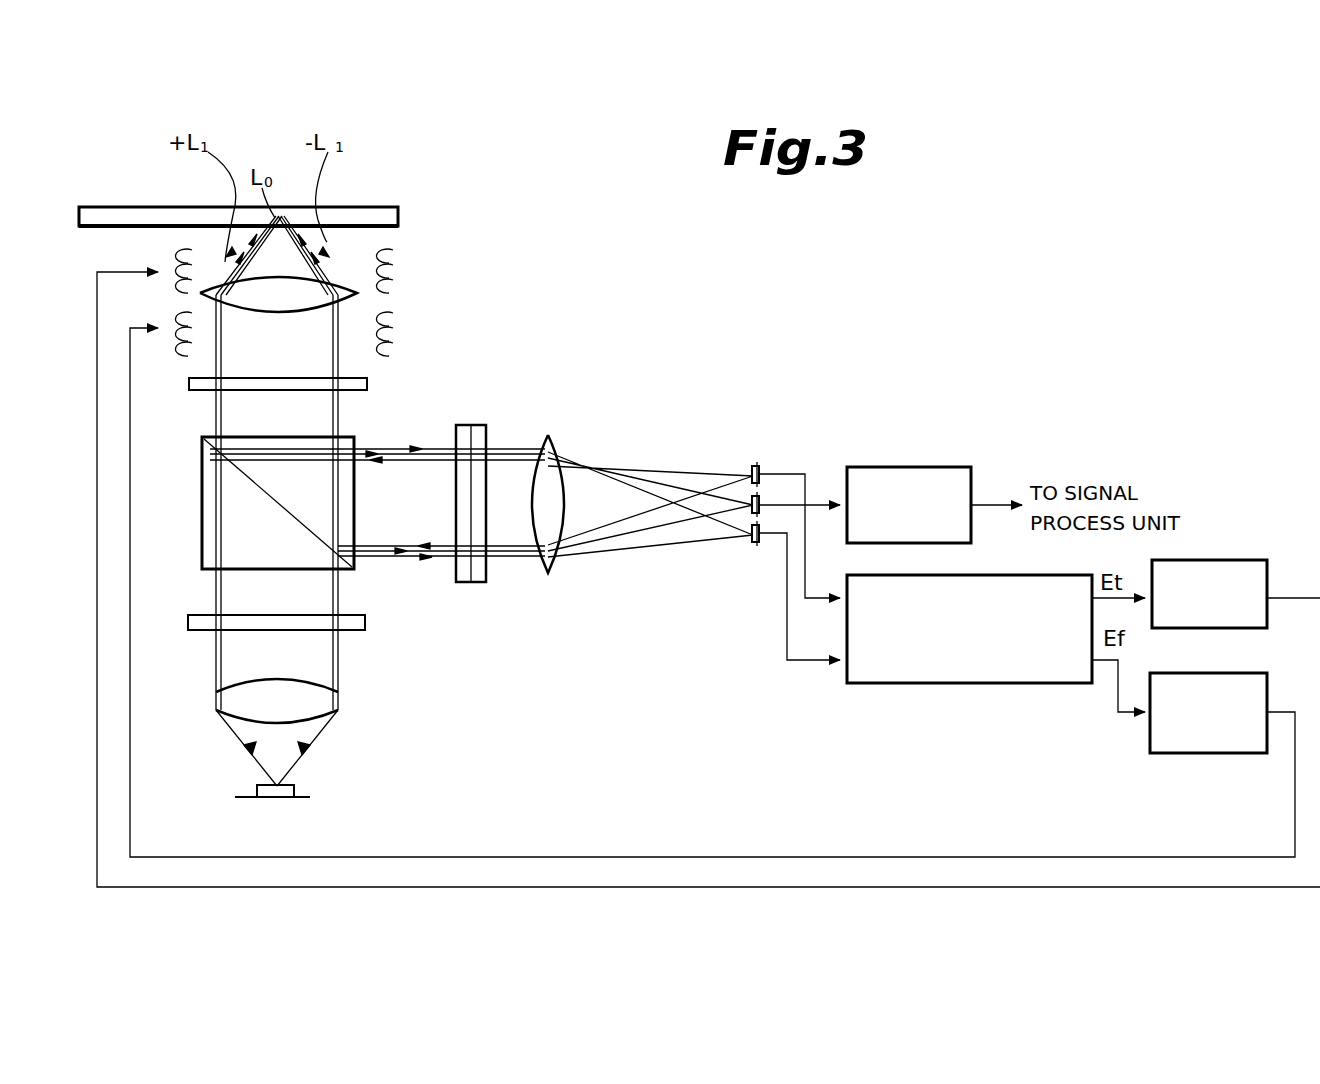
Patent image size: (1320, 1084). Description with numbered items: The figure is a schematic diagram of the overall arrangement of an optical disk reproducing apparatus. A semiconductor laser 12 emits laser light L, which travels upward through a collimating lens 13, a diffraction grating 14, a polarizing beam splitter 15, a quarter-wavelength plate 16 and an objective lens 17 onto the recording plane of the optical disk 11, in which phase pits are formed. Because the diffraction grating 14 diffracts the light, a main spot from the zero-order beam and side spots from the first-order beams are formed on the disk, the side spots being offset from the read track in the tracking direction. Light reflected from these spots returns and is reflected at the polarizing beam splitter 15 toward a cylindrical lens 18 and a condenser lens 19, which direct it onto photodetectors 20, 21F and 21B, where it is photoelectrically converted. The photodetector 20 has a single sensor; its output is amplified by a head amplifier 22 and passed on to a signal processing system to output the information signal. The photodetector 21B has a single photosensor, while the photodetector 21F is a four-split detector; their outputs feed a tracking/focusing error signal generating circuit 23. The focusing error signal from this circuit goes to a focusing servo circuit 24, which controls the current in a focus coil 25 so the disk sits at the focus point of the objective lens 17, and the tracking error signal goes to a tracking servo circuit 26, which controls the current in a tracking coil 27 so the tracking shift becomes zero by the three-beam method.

The optical disk 11 is at (378, 205).
The semiconductor laser 12 is at (280, 798).
The collimating lens 13 is at (322, 702).
The diffraction grating 14 is at (360, 627).
The polarizing beam splitter 15 is at (318, 560).
The quarter-wavelength plate 16 is at (362, 385).
The objective lens 17 is at (318, 298).
The cylindrical lens 18 is at (482, 438).
The condenser lens 19 is at (550, 558).
The photodetector 20 is at (760, 503).
The photodetector 21B is at (752, 462).
The photodetector 21F is at (752, 548).
The head amplifier 22 is at (912, 466).
The tracking/focusing error signal generating circuit 23 is at (973, 684).
The focusing servo circuit 24 is at (1210, 754).
The focus coil 25 is at (178, 358).
The tracking servo circuit 26 is at (1236, 559).
The tracking coil 27 is at (168, 247).
The laser light L is at (325, 730).